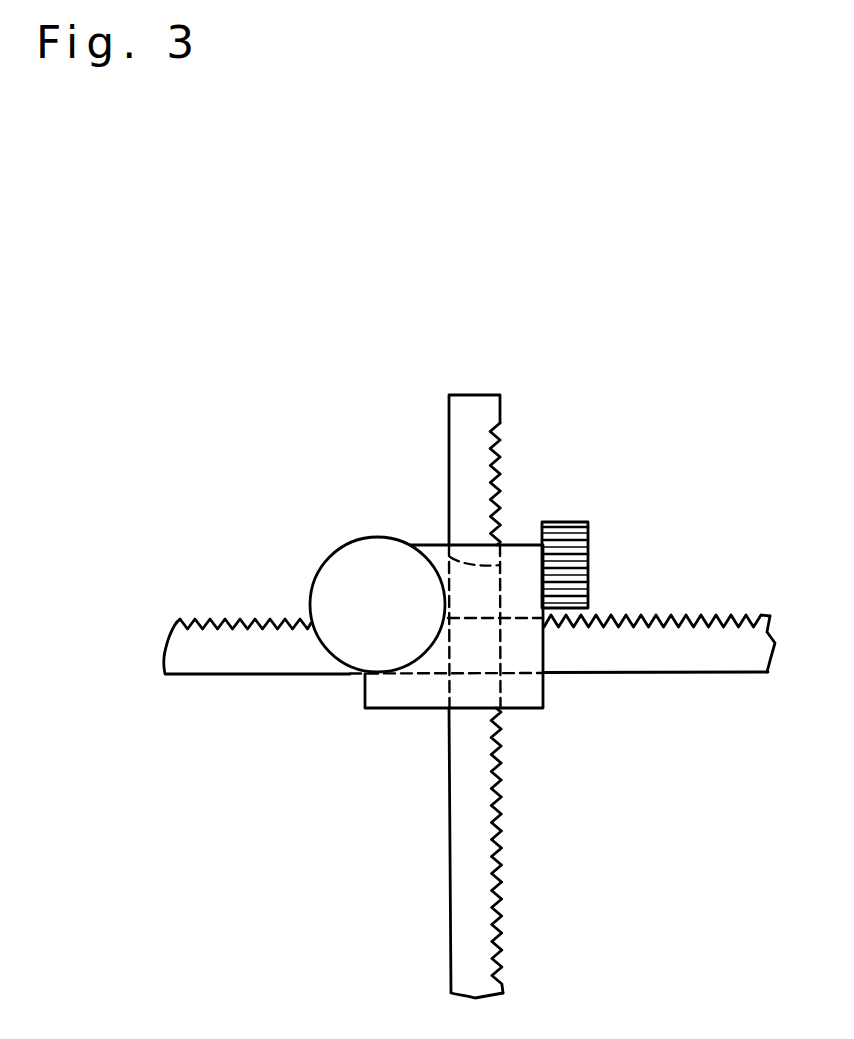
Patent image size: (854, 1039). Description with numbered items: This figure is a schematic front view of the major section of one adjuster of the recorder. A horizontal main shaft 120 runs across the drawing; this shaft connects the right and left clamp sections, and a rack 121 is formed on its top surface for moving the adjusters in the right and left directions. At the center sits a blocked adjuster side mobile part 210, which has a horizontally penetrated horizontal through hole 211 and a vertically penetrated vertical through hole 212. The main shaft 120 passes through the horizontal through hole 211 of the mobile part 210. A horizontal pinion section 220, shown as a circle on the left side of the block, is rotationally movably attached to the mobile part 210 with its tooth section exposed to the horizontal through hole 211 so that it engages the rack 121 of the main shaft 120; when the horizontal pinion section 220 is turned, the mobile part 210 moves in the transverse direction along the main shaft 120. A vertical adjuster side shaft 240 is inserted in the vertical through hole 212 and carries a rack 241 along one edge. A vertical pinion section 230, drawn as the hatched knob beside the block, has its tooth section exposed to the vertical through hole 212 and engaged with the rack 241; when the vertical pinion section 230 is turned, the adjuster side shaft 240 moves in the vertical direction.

The main shaft 120 is at (240, 662).
The rack 121 is at (245, 623).
The adjuster side mobile part 210 is at (521, 545).
The horizontal through hole 211 is at (528, 672).
The vertical through hole 212 is at (450, 557).
The horizontal pinion section 220 is at (340, 577).
The vertical pinion section 230 is at (587, 521).
The adjuster side shaft 240 is at (472, 937).
The rack 241 is at (504, 866).